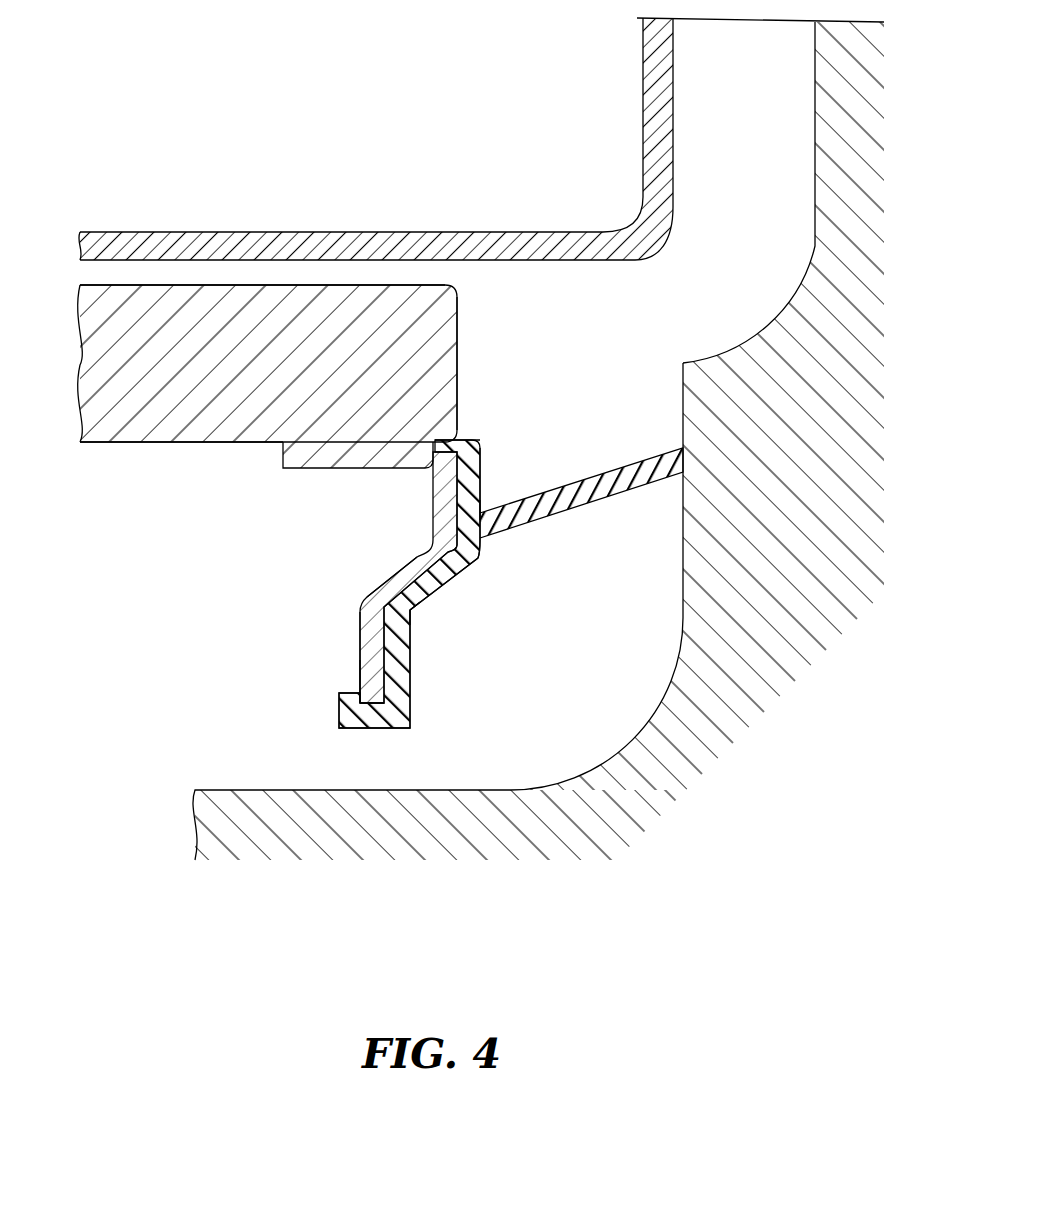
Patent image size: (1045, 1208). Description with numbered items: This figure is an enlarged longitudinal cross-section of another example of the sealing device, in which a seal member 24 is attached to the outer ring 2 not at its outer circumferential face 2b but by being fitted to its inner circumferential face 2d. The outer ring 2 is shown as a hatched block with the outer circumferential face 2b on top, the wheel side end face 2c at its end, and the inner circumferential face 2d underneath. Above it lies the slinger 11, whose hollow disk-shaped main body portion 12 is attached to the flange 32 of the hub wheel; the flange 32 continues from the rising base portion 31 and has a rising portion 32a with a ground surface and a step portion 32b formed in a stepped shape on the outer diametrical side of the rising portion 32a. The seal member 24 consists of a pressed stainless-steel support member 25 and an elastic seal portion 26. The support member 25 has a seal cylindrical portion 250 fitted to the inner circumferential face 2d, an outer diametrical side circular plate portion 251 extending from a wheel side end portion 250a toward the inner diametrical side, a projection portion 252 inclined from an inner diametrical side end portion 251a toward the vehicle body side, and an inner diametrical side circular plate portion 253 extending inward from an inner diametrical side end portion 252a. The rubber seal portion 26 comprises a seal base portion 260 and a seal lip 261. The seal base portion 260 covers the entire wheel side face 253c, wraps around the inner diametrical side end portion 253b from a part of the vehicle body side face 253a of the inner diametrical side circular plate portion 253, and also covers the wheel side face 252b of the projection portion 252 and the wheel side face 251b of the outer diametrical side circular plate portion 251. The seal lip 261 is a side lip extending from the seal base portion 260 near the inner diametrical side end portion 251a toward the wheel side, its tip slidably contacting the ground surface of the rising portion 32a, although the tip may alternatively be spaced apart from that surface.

The slinger 11 is at (642, 30).
The main body portion 12 is at (643, 77).
The outer ring 2 is at (284, 356).
The outer circumferential face 2b is at (143, 285).
The wheel side end face 2c is at (458, 332).
The inner circumferential face 2d is at (150, 444).
The seal cylindrical portion 250 is at (283, 462).
The wheel side end portion 250a is at (460, 443).
The seal member 24 is at (465, 554).
The support member 25 is at (432, 504).
The seal portion 26 is at (457, 533).
The outer diametrical side circular plate portion 251 is at (482, 540).
The inner diametrical side end portion 251a is at (477, 564).
The wheel side face 251b is at (482, 511).
The projection portion 252 is at (445, 590).
The inner diametrical side end portion 252a is at (411, 612).
The wheel side face 252b is at (403, 582).
The inner diametrical side circular plate portion 253 is at (360, 612).
The vehicle body side face 253a is at (360, 685).
The inner diametrical side end portion 253b is at (345, 705).
The wheel side face 253c is at (395, 671).
The seal base portion 260 is at (412, 718).
The seal lip 261 is at (598, 474).
The rising base portion 31 is at (600, 836).
The flange 32 is at (569, 441).
The rising portion 32a is at (683, 546).
The step portion 32b is at (815, 160).